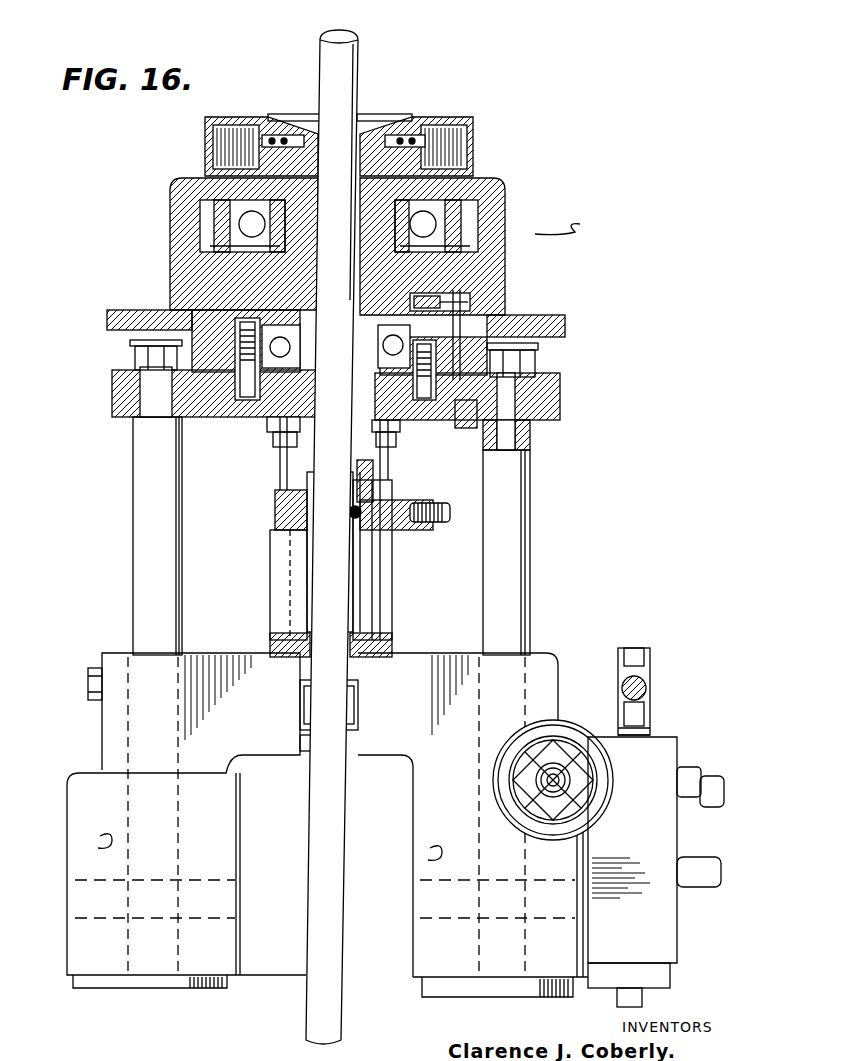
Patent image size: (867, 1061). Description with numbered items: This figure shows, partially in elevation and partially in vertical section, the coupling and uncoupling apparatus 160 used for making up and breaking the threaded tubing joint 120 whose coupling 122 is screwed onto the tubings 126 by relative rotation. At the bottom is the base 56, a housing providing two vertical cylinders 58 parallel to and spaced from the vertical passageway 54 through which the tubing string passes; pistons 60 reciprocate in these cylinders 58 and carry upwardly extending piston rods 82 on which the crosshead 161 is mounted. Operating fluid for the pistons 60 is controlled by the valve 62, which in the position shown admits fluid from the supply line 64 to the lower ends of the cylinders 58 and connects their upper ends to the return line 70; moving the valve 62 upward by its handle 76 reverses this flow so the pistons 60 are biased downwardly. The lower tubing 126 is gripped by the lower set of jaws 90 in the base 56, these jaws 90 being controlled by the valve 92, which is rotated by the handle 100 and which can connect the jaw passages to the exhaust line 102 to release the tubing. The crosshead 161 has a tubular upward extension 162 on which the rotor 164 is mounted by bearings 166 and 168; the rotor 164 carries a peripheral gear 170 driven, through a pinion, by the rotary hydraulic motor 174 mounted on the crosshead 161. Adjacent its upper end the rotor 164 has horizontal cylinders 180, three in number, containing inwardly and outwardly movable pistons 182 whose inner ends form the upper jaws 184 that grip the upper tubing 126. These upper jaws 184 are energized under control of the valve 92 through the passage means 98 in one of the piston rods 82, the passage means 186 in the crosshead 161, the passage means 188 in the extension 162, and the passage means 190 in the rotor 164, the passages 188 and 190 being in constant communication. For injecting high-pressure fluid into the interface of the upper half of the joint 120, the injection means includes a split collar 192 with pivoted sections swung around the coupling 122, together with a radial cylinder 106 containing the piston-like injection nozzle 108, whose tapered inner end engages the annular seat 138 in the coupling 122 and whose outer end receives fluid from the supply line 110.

The tubing 126 is at (362, 46).
The horizontal cylinders 180 is at (288, 135).
The pistons 182 is at (270, 138).
The jaws 184 is at (382, 124).
The rotor 164 is at (490, 186).
The bearing 168 is at (465, 232).
The coupling and uncoupling apparatus 160 is at (535, 234).
The passage means 190 is at (250, 268).
The passage means 188 is at (448, 302).
The tubular upward extension 162 is at (185, 292).
The bearing 166 is at (435, 330).
The peripheral gear 170 is at (560, 327).
The crosshead 161 is at (106, 418).
The passage means 186 is at (458, 430).
The passage means 98 is at (532, 446).
The injection nozzle 108 is at (366, 494).
The radial cylinder 106 is at (420, 502).
The supply line 110 is at (448, 520).
The split collar 192 is at (275, 518).
The annular seat 138 is at (362, 518).
The tubing joint 120 is at (376, 588).
The coupling 122 is at (312, 583).
The rotary hydraulic motor 174 is at (385, 616).
The piston rods 82 is at (138, 562).
The jaws 90 is at (303, 706).
The passageway 54 is at (308, 748).
The handle 76 is at (650, 684).
The valve 62 is at (652, 742).
The return line 102 is at (692, 770).
The return line 70 is at (715, 782).
The handle 100 is at (528, 816).
The valve 92 is at (555, 788).
The supply line 64 is at (703, 860).
The cylinders 58 is at (100, 836).
The base 56 is at (92, 870).
The pistons 60 is at (85, 915).